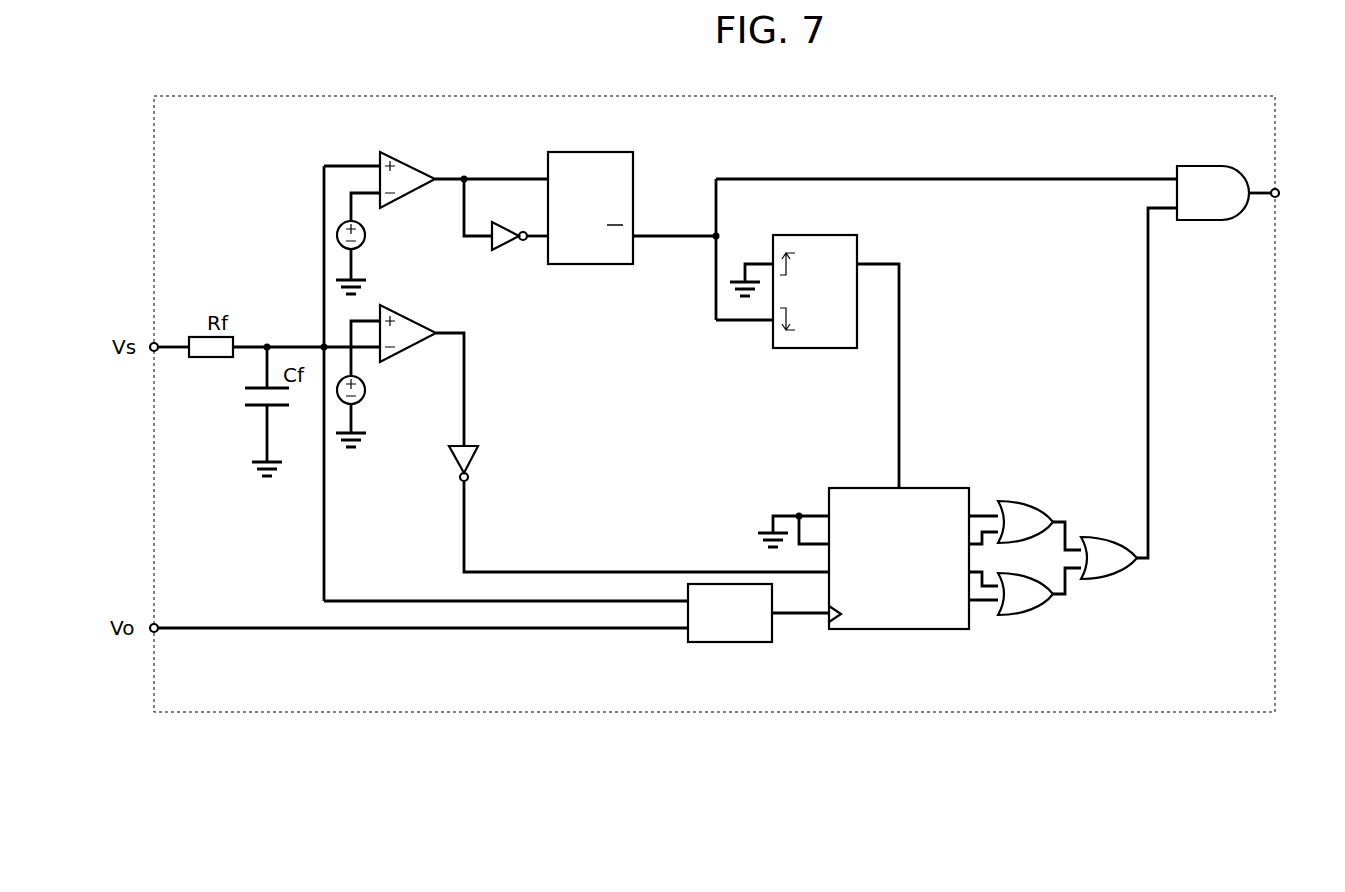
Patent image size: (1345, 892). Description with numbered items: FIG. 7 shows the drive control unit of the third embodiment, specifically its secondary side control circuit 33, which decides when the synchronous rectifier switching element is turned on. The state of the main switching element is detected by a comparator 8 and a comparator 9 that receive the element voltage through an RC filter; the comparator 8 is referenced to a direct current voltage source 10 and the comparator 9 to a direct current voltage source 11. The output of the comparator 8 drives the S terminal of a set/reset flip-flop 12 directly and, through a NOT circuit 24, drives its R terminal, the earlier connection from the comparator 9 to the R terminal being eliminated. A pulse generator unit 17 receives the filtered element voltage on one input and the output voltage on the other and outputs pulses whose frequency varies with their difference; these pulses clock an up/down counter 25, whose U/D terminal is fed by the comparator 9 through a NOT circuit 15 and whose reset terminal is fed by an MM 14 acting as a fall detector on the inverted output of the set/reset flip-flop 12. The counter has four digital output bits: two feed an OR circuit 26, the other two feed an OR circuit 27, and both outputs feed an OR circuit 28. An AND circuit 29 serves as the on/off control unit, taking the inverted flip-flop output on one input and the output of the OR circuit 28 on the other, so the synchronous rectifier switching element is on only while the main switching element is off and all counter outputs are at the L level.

The comparator 8 is at (379, 151).
The comparator 9 is at (410, 313).
The direct current voltage source 10 is at (337, 235).
The direct current voltage source 11 is at (365, 395).
The set/reset flip-flop 12 is at (547, 151).
The MM 14 is at (773, 348).
The NOT circuit 15 is at (450, 456).
The pulse generator unit 17 is at (688, 642).
The NOT circuit 24 is at (503, 252).
The up/down counter 25 is at (828, 488).
The OR circuit 26 is at (1010, 500).
The OR circuit 27 is at (1005, 618).
The OR circuit 28 is at (1095, 585).
The AND circuit 29 is at (1205, 222).
The secondary side control circuit 33 is at (1277, 714).